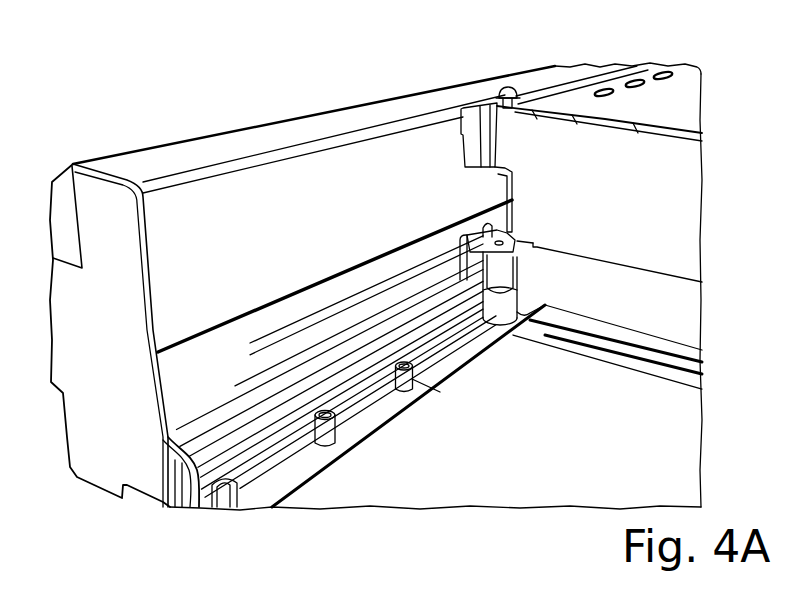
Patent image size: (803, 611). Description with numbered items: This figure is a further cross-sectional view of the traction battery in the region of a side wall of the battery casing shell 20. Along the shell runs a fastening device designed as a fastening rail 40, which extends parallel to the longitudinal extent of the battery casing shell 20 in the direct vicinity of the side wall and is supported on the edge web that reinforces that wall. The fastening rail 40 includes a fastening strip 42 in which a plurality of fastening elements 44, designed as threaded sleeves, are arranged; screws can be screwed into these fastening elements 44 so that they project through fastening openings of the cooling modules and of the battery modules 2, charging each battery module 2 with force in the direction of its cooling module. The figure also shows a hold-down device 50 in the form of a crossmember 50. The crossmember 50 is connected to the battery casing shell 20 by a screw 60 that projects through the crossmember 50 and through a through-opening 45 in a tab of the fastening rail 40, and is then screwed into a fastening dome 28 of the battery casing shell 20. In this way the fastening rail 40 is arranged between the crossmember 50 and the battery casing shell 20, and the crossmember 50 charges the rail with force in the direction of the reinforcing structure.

The battery module 2 is at (683, 100).
The battery casing shell 20 is at (672, 462).
The fastening dome 28 is at (458, 278).
The fastening rail 40 is at (217, 378).
The fastening strip 42 is at (278, 480).
The fastening element 44 is at (333, 429).
The through-opening 45 is at (490, 235).
The hold-down device 50 is at (663, 202).
The screw 60 is at (508, 87).